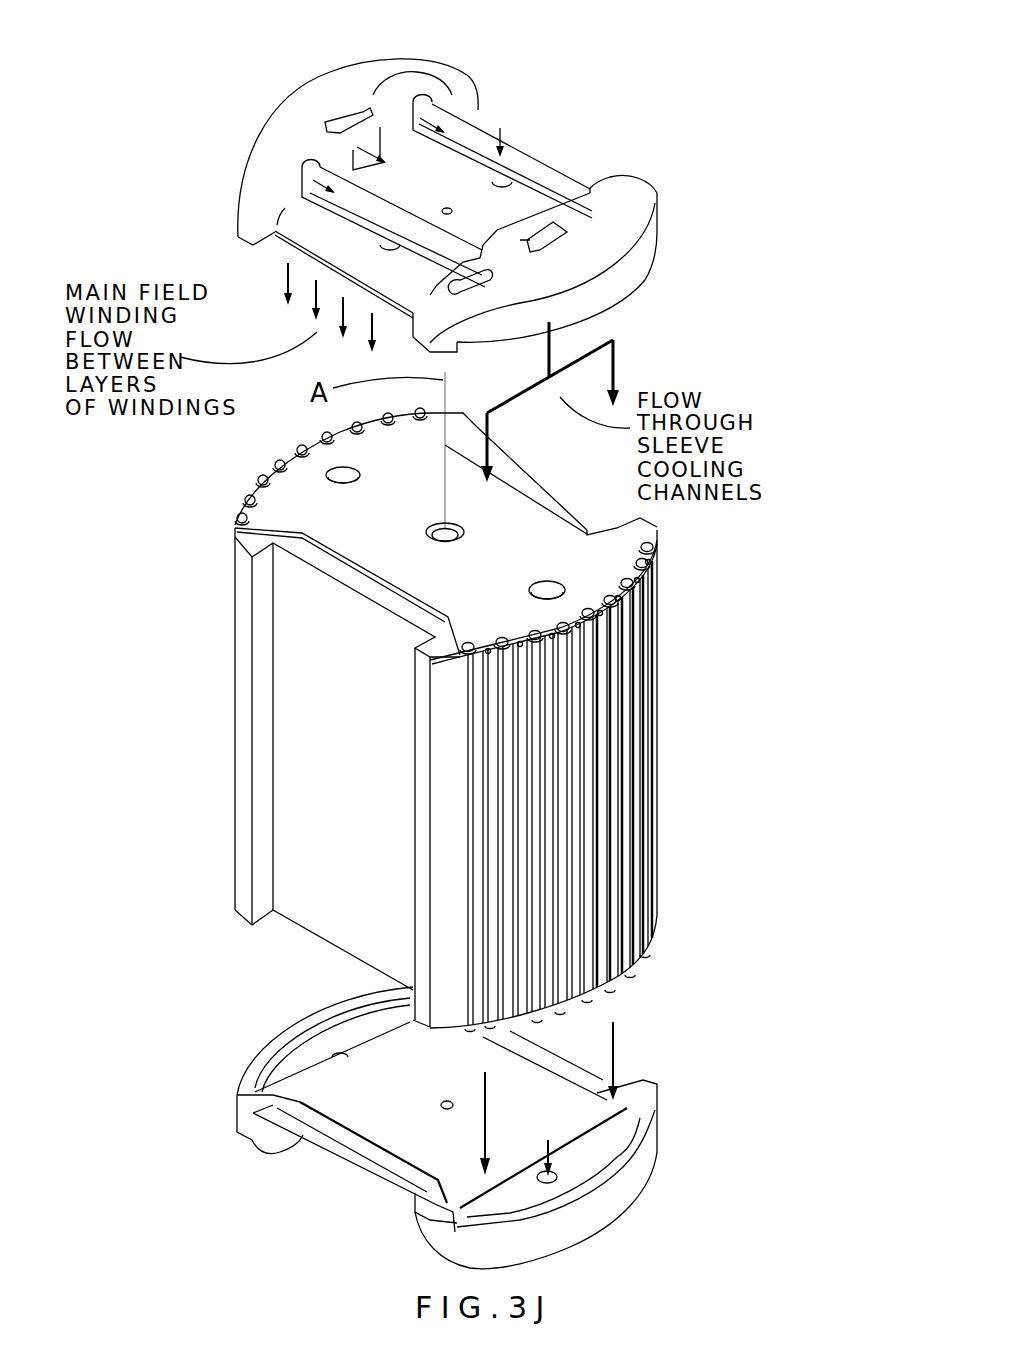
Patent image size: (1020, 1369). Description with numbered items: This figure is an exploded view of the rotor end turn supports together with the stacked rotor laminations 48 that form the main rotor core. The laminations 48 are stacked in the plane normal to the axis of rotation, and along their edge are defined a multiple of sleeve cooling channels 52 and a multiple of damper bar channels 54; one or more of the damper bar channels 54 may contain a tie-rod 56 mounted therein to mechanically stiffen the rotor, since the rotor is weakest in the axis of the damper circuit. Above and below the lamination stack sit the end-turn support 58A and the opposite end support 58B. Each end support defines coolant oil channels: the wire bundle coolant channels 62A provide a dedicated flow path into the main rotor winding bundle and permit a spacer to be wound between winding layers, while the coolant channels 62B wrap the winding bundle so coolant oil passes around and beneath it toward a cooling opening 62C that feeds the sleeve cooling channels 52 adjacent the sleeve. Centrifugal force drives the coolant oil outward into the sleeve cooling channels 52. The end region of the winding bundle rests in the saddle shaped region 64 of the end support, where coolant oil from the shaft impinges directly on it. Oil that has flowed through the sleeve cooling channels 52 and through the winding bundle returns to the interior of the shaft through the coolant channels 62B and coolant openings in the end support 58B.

The rotor laminations 48 is at (215, 650).
The sleeve cooling channels 52 is at (262, 472).
The damper bar channels 54 is at (535, 618).
The tie-rod 56 is at (658, 565).
The end-turn support 58A is at (652, 222).
The end support 58B is at (655, 1147).
The wire bundle coolant channels 62A is at (375, 132).
The coolant channels 62B is at (312, 165).
The cooling opening 62C is at (400, 240).
The saddle shaped region 64 is at (393, 208).